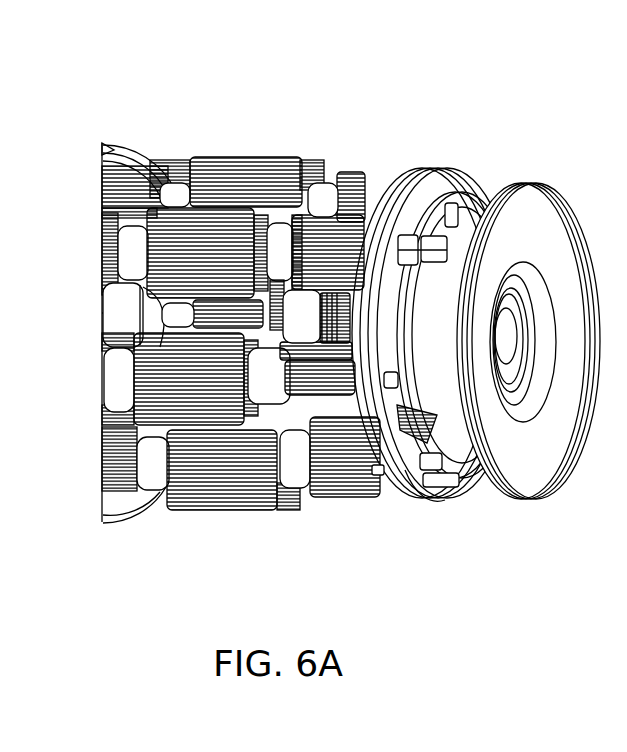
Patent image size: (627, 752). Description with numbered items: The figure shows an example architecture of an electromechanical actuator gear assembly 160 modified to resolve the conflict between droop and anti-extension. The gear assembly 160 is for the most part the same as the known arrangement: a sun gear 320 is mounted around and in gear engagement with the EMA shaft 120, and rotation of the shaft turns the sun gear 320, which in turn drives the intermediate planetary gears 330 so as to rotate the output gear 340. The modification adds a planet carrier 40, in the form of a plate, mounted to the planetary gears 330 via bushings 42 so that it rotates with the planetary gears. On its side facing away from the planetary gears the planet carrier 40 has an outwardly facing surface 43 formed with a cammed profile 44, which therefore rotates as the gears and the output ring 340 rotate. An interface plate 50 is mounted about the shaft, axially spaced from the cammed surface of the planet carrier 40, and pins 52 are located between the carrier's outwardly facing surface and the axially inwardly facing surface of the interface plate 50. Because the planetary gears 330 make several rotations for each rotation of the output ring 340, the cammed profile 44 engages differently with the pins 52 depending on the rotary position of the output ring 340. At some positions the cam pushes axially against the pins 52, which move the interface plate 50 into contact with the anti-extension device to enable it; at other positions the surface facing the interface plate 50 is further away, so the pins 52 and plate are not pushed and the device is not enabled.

The gear assembly 160 is at (172, 530).
The output gear 340 is at (124, 146).
The intermediate planetary gears 330 is at (268, 188).
The sun gear 320 is at (333, 186).
The planet carrier 40 is at (400, 170).
The bushings 42 is at (377, 473).
The outwardly facing surface 43 is at (423, 220).
The cammed profile 44 is at (423, 507).
The interface plate 50 is at (535, 178).
The pins 52 is at (434, 262).
The EMA shaft 120 is at (520, 293).